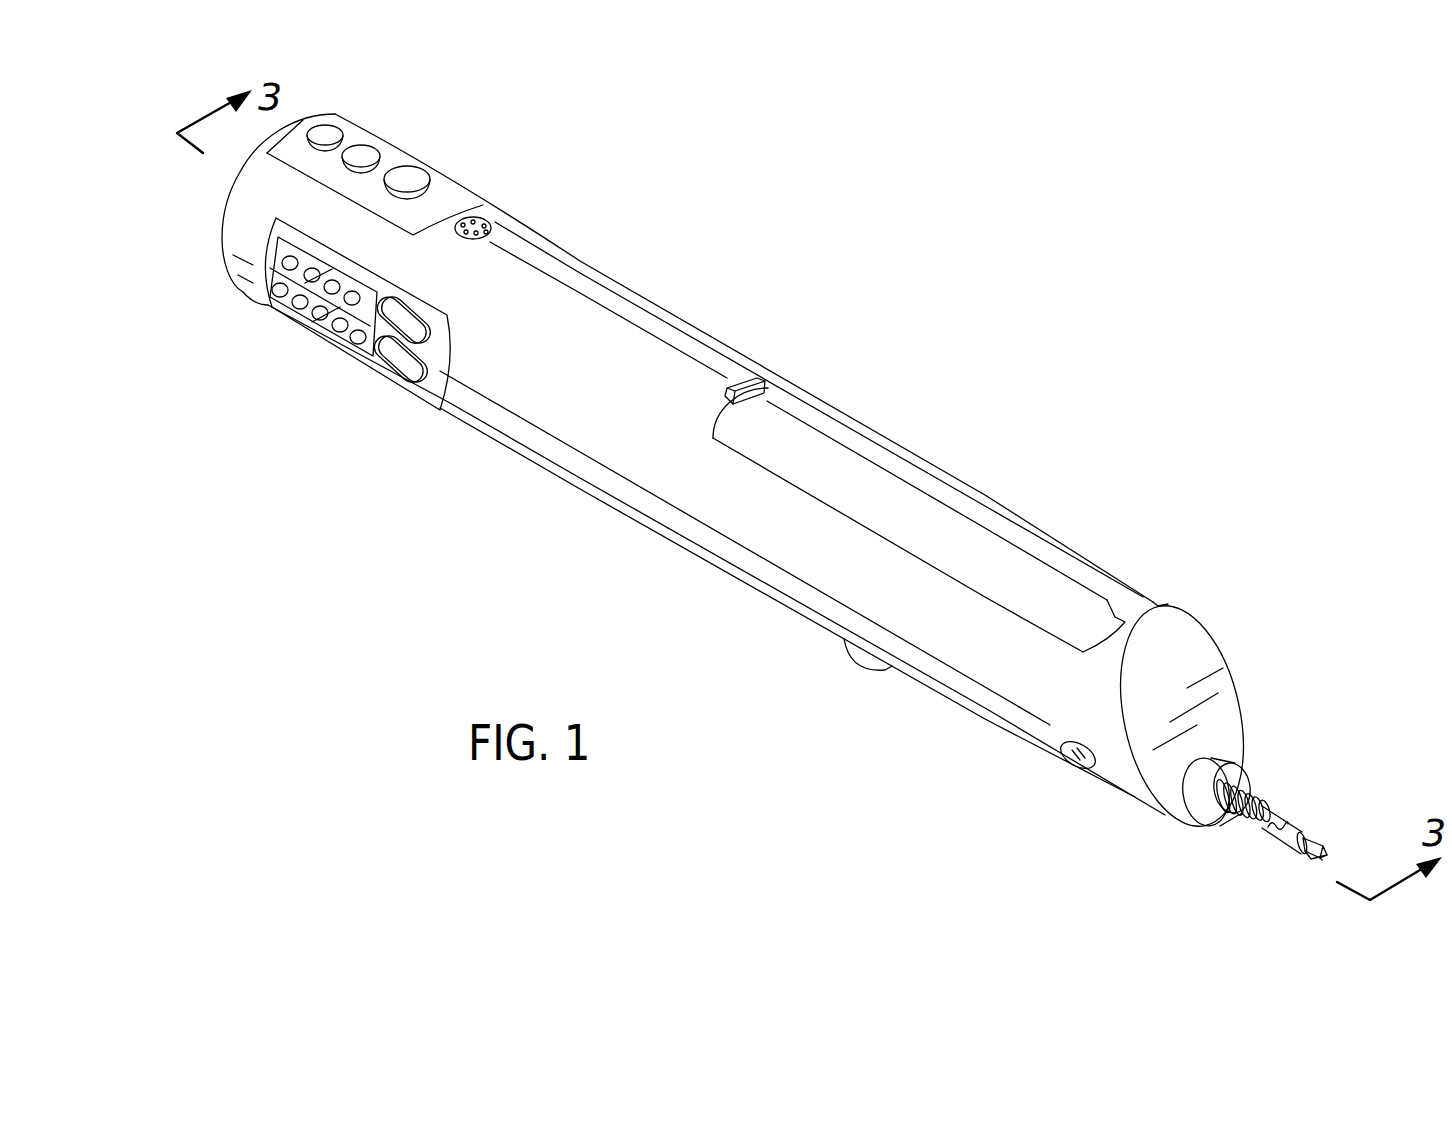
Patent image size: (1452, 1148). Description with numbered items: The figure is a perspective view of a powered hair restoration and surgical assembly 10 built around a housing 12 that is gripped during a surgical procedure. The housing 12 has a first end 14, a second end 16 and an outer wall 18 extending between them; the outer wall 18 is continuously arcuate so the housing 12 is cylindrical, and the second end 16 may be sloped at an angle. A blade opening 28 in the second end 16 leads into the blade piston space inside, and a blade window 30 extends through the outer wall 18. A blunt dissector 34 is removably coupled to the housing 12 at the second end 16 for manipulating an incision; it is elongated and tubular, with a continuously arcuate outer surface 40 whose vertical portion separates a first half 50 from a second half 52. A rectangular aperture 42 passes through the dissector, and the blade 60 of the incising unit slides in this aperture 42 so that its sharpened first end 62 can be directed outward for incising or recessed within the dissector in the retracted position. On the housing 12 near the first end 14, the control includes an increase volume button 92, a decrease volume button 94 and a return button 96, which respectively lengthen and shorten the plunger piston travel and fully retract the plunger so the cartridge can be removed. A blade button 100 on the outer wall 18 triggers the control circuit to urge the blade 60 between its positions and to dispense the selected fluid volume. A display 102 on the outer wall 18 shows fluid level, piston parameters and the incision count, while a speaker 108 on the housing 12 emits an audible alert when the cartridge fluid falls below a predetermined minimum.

The powered hair restoration and surgical assembly 10 is at (1012, 421).
The housing 12 is at (1213, 634).
The first end 14 is at (229, 203).
The second end 16 is at (1227, 680).
The outer wall 18 is at (730, 513).
The blade opening 28 is at (1185, 787).
The blade window 30 is at (1072, 764).
The blunt dissector 34 is at (1290, 807).
The outer surface 40 is at (1268, 834).
The aperture 42 is at (1314, 842).
The first half 50 is at (1220, 826).
The second half 52 is at (1253, 786).
The blade 60 is at (1303, 855).
The first end 62 is at (1320, 858).
The increase volume button 92 is at (364, 152).
The decrease volume button 94 is at (326, 128).
The return button 96 is at (405, 178).
The blade button 100 is at (853, 661).
The display 102 is at (297, 297).
The speaker 108 is at (474, 228).